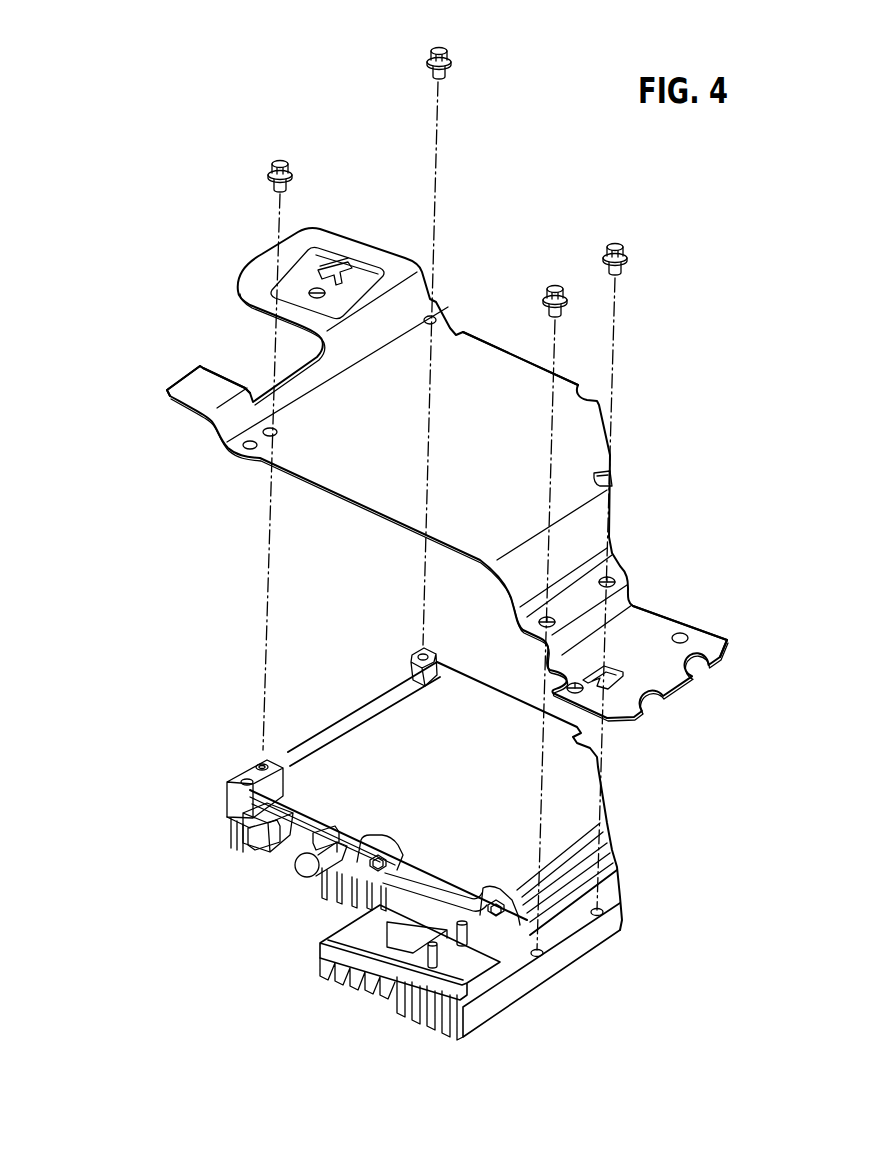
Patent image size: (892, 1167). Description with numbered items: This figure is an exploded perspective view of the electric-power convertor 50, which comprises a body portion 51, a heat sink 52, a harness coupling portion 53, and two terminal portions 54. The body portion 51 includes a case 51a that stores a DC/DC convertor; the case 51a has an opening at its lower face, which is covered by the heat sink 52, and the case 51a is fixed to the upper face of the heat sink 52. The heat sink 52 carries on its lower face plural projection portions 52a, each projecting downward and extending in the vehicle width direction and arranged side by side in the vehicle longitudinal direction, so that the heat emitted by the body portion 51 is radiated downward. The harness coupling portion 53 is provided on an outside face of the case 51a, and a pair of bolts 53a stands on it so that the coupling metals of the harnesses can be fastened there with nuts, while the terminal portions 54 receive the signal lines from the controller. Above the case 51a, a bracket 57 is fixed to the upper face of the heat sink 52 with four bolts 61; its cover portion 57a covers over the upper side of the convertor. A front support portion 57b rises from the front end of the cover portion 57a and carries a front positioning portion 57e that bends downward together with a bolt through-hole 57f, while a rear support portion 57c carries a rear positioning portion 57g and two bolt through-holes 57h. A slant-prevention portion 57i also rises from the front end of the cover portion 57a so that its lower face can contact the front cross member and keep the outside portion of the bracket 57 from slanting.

The electric-power convertor 50 is at (131, 154).
The bolts 61 is at (432, 52).
The bracket 57 is at (470, 332).
The cover portion 57a is at (494, 370).
The front support portion 57b is at (326, 238).
The rear support portion 57c is at (648, 623).
The front positioning portion 57e is at (338, 268).
The bolt through-hole 57f is at (318, 300).
The rear positioning portion 57g is at (612, 667).
The bolt through-holes 57h is at (683, 634).
The slant-prevention portion 57i is at (185, 385).
The body portion 51 is at (392, 846).
The case 51a is at (363, 737).
The heat sink 52 is at (272, 876).
The projection portions 52a is at (342, 880).
The harness coupling portion 53 is at (363, 937).
The bolts 53a is at (467, 932).
The terminal portions 54 is at (245, 835).